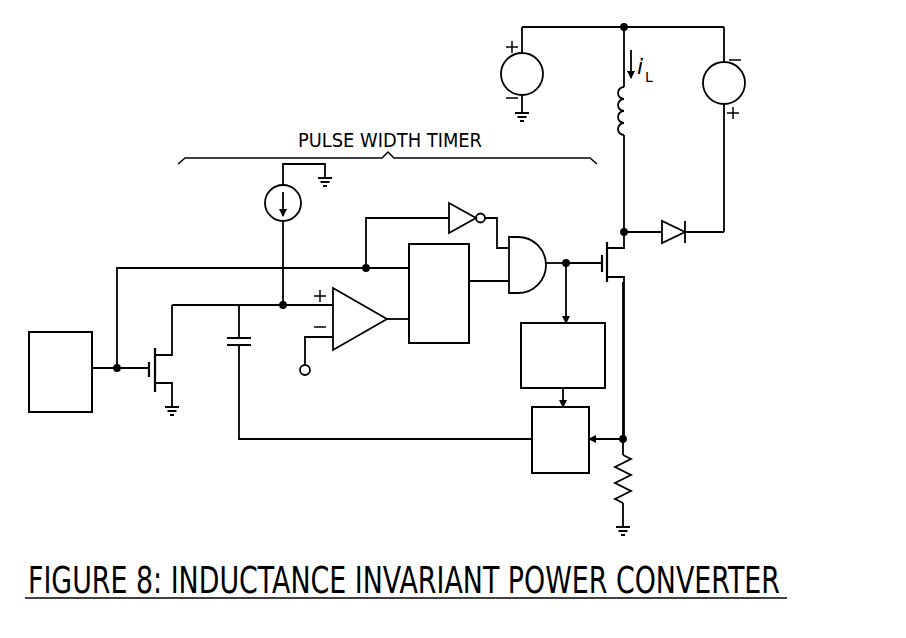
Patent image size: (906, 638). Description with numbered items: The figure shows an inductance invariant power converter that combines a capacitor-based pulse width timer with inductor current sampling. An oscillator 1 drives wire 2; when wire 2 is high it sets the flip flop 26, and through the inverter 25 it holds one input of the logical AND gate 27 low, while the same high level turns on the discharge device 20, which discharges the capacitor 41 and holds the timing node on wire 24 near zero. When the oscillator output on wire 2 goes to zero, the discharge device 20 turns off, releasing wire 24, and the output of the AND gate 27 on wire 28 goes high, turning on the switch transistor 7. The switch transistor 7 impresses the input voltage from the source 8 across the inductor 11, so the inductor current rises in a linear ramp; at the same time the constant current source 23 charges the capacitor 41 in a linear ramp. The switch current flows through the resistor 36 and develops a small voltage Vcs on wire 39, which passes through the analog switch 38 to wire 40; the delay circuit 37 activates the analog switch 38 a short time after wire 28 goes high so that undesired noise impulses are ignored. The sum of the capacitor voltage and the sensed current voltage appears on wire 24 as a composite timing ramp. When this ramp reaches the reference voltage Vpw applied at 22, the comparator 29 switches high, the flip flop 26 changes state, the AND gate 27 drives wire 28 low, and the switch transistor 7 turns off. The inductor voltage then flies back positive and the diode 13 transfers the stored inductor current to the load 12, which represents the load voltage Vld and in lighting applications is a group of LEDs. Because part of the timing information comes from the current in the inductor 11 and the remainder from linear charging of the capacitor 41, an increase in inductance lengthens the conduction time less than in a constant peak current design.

The oscillator 1 is at (56, 332).
The wire 2 is at (188, 265).
The switch transistor 7 is at (601, 276).
The source 8 is at (545, 70).
The inductor 11 is at (629, 124).
The load 12 is at (704, 87).
The diode 13 is at (688, 236).
The discharge device 20 is at (155, 385).
The pulse width voltage terminal VPW 22 is at (297, 376).
The current source 23 is at (265, 190).
The wire 24 is at (279, 243).
The inverter 25 is at (448, 203).
The flip flop 26 is at (443, 344).
The logical AND gate 27 is at (530, 227).
The wire 28 is at (564, 262).
The comparator 29 is at (366, 337).
The resistor 36 is at (630, 458).
The delay circuit 37 is at (529, 387).
The analog switch 38 is at (532, 444).
The wire 39 is at (623, 397).
The wire 40 is at (402, 439).
The capacitor 41 is at (248, 347).